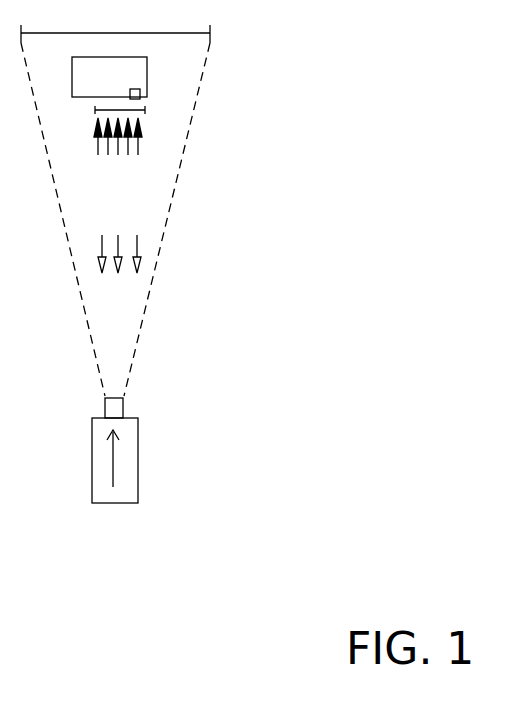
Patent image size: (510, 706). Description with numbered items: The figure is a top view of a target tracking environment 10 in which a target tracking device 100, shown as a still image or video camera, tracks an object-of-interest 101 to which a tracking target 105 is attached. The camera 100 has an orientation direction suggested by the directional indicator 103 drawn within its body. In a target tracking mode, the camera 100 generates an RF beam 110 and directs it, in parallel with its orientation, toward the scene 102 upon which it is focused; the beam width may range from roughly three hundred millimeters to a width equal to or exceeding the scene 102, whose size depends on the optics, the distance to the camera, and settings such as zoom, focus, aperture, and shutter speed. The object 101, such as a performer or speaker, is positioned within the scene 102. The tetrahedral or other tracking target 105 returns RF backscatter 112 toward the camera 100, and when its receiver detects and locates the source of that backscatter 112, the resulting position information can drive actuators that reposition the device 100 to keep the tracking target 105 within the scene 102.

The target tracking environment 10 is at (368, 479).
The target tracking device 100 is at (139, 428).
The object-of-interest 101 is at (125, 86).
The scene 102 is at (212, 28).
The directional indicator 103 is at (117, 480).
The tracking target 105 is at (140, 92).
The RF beam 110 is at (117, 178).
The RF backscatter 112 is at (106, 216).